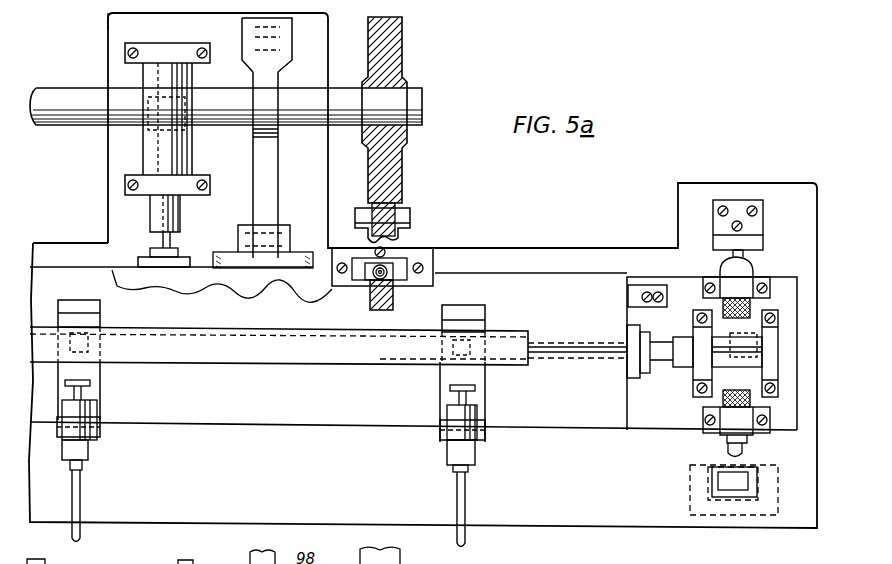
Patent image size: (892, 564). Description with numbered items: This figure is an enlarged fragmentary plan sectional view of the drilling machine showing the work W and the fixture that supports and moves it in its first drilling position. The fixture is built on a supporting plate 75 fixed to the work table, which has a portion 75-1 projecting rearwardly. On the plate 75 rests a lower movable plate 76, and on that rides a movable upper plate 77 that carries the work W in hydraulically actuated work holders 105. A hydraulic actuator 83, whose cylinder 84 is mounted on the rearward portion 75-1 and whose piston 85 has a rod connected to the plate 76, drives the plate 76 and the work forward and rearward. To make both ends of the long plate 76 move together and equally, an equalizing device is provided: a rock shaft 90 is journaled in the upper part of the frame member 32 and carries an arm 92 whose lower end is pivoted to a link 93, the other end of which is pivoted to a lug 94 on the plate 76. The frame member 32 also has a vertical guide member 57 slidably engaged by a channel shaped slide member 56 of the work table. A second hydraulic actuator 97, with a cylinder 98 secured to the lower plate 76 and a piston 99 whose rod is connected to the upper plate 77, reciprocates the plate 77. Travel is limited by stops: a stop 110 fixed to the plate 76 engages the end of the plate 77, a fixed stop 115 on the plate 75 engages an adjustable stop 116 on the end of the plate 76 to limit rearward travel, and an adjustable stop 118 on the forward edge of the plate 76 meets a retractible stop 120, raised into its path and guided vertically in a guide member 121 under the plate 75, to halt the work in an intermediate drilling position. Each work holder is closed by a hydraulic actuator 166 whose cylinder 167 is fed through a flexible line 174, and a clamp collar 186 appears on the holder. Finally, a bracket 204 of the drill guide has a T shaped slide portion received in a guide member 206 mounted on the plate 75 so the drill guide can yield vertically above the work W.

The rearwardly projecting portion 75-1 is at (122, 24).
The rock shaft 90 is at (44, 92).
The hydraulic actuator 83 is at (138, 76).
The cylinder 84 is at (143, 144).
The arm 92 is at (270, 79).
The frame member 32 is at (395, 43).
The link 93 is at (274, 184).
The vertical guide member 57 is at (396, 205).
The slide member 56 is at (411, 229).
The lug 94 is at (292, 257).
The supporting plate 75 is at (60, 243).
The upper plate 77 is at (42, 272).
The piston 85 is at (162, 241).
The movable plate 76 is at (196, 276).
The guide member 206 is at (357, 280).
The bracket 204 is at (370, 302).
The work W is at (292, 349).
The work holder 105 is at (108, 371).
The hydraulic actuator 166 is at (439, 437).
The clamp collar 186 is at (105, 437).
The cylinder 167 is at (92, 447).
The flexible line 174 is at (83, 530).
The cylinder 98 is at (703, 362).
The piston 99 is at (730, 333).
The hydraulic actuator 97 is at (694, 384).
The adjustable stop 116 is at (745, 290).
The fixed stop 115 is at (758, 245).
The adjustable stop 118 is at (730, 420).
The stop 110 is at (642, 290).
The retractible stop 120 is at (733, 490).
The guide member 121 is at (755, 503).